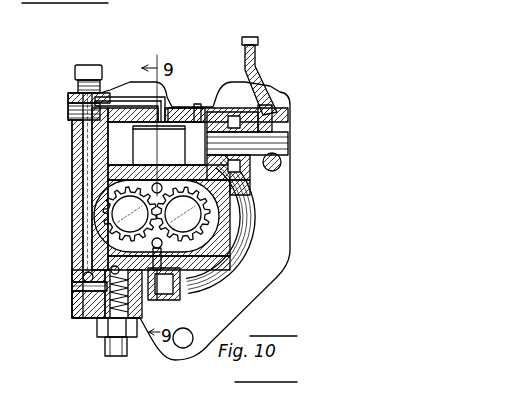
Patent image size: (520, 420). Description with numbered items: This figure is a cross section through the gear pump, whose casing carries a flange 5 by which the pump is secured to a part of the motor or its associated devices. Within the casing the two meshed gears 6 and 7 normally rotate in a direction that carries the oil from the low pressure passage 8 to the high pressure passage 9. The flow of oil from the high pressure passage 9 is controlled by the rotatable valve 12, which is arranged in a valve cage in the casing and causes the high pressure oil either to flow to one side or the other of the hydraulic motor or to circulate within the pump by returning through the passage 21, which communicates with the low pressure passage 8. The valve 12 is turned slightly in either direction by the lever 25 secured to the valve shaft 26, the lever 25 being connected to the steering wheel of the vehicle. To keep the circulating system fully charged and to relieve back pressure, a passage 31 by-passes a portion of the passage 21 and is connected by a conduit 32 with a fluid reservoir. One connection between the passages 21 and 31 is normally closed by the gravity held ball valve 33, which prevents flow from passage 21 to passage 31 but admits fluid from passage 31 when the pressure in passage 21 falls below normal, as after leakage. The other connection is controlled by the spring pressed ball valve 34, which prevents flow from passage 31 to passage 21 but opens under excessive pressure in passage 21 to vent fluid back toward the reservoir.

The flange 5 is at (179, 221).
The gear 6 is at (104, 215).
The gear 7 is at (210, 213).
The low pressure passage 8 is at (172, 262).
The high pressure passage 9 is at (150, 183).
The valve 12 is at (145, 143).
The passage 21 is at (120, 105).
The lever 25 is at (258, 42).
The valve shaft 26 is at (289, 143).
The passage 31 is at (93, 291).
The conduit 32 is at (118, 357).
The gravity held ball valve 33 is at (83, 277).
The spring pressed ball valve 34 is at (118, 273).